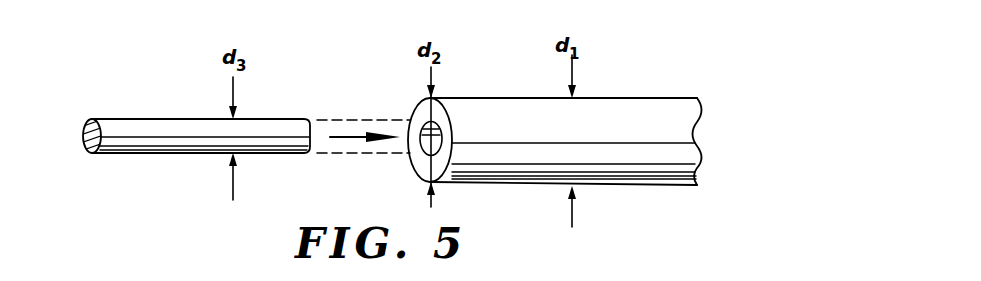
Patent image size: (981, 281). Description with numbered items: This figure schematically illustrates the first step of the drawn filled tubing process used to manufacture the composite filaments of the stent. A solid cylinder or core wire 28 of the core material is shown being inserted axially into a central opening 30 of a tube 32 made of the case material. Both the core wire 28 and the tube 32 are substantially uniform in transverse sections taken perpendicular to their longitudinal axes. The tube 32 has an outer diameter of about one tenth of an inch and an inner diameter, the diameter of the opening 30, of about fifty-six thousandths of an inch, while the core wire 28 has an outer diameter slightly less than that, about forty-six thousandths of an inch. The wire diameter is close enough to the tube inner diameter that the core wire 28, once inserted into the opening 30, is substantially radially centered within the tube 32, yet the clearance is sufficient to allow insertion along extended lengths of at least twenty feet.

The core wire 28 is at (134, 127).
The central opening 30 is at (430, 148).
The tube 32 is at (667, 117).